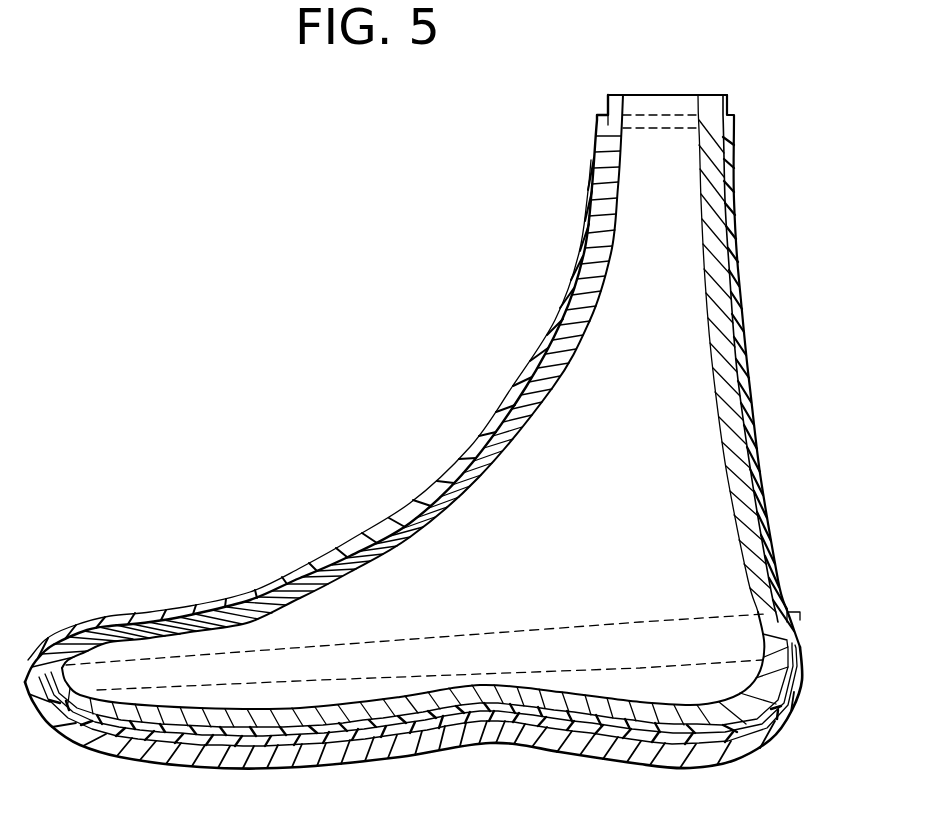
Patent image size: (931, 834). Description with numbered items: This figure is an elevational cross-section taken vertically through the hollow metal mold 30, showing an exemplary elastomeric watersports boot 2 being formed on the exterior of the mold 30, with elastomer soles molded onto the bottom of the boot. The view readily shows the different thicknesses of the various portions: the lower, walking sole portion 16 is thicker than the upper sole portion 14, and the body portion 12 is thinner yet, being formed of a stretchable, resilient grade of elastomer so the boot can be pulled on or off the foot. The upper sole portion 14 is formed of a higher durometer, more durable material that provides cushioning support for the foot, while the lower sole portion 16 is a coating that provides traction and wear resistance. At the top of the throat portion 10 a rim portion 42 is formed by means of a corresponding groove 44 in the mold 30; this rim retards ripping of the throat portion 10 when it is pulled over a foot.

The boot 2 is at (412, 388).
The throat portion 10 is at (736, 134).
The body portion 12 is at (738, 258).
The hollow metal mold 30 is at (742, 330).
The upper sole portion 14 is at (800, 636).
The lower, walking sole portion 16 is at (750, 746).
The rim portion 42 is at (598, 118).
The groove 44 is at (672, 128).